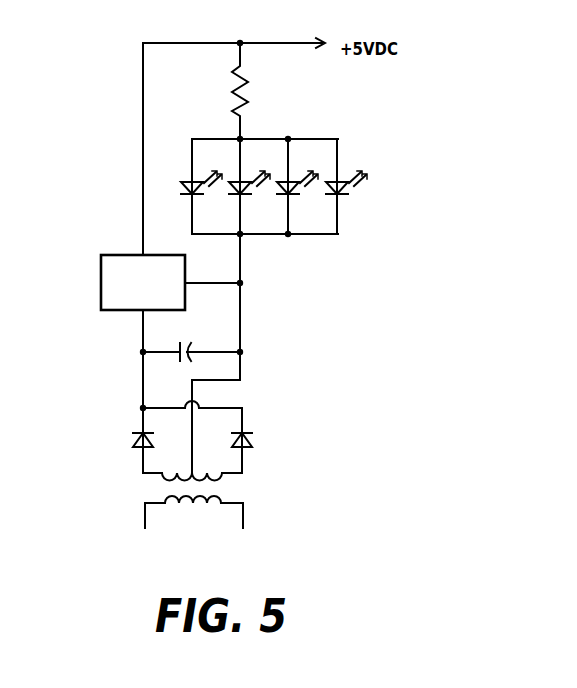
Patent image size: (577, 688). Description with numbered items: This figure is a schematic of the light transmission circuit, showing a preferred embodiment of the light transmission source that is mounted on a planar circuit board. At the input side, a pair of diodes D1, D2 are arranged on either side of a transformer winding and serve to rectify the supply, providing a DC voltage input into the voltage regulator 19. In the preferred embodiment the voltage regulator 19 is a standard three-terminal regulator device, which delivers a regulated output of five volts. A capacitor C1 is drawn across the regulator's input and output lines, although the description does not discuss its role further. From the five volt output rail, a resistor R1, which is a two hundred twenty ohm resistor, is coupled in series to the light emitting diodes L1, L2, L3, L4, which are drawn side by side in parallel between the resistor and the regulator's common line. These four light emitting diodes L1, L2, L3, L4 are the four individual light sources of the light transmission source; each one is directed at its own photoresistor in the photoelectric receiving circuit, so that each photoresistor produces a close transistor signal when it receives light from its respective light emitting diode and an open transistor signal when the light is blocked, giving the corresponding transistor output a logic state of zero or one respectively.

The voltage regulator 19 is at (101, 276).
The resistor R1 is at (258, 91).
The light emitting diode L1 is at (201, 186).
The light emitting diode L2 is at (249, 186).
The light emitting diode L3 is at (297, 186).
The light emitting diode L4 is at (346, 186).
The capacitor C1 is at (191, 337).
The diode D1 is at (129, 441).
The diode D2 is at (259, 441).